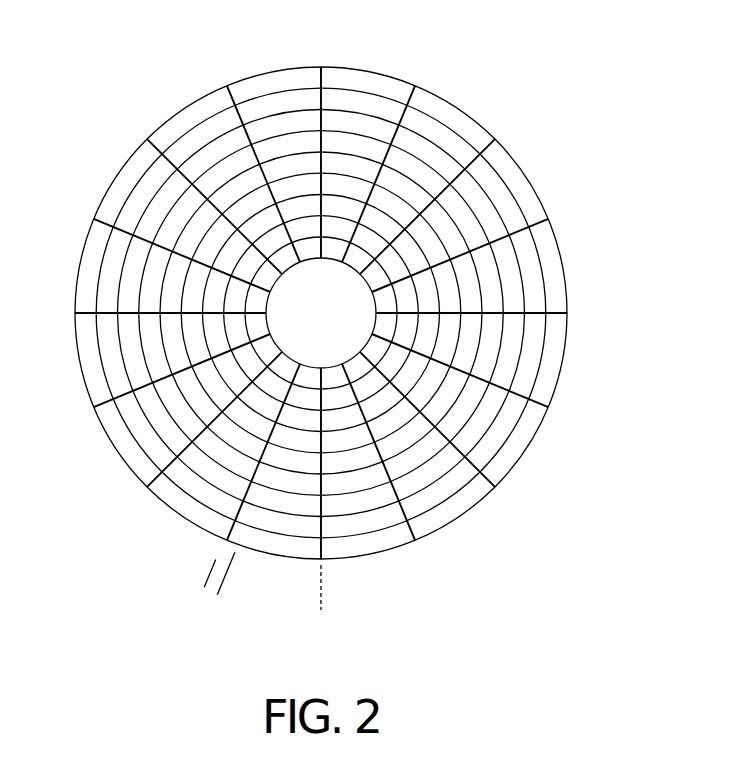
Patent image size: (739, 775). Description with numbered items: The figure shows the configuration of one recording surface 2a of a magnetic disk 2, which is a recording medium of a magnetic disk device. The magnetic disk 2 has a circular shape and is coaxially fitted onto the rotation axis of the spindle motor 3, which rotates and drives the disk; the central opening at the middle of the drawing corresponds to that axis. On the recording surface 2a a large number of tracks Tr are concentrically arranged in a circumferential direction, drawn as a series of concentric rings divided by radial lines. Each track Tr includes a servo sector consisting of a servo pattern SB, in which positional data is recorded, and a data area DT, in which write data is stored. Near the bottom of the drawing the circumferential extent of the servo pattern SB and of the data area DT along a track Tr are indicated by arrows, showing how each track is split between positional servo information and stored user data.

The magnetic disk 2 is at (322, 283).
The recording surface 2a is at (371, 80).
The spindle motor 3 is at (355, 324).
The track Tr is at (122, 186).
The servo pattern SB is at (167, 542).
The data area DT is at (321, 589).